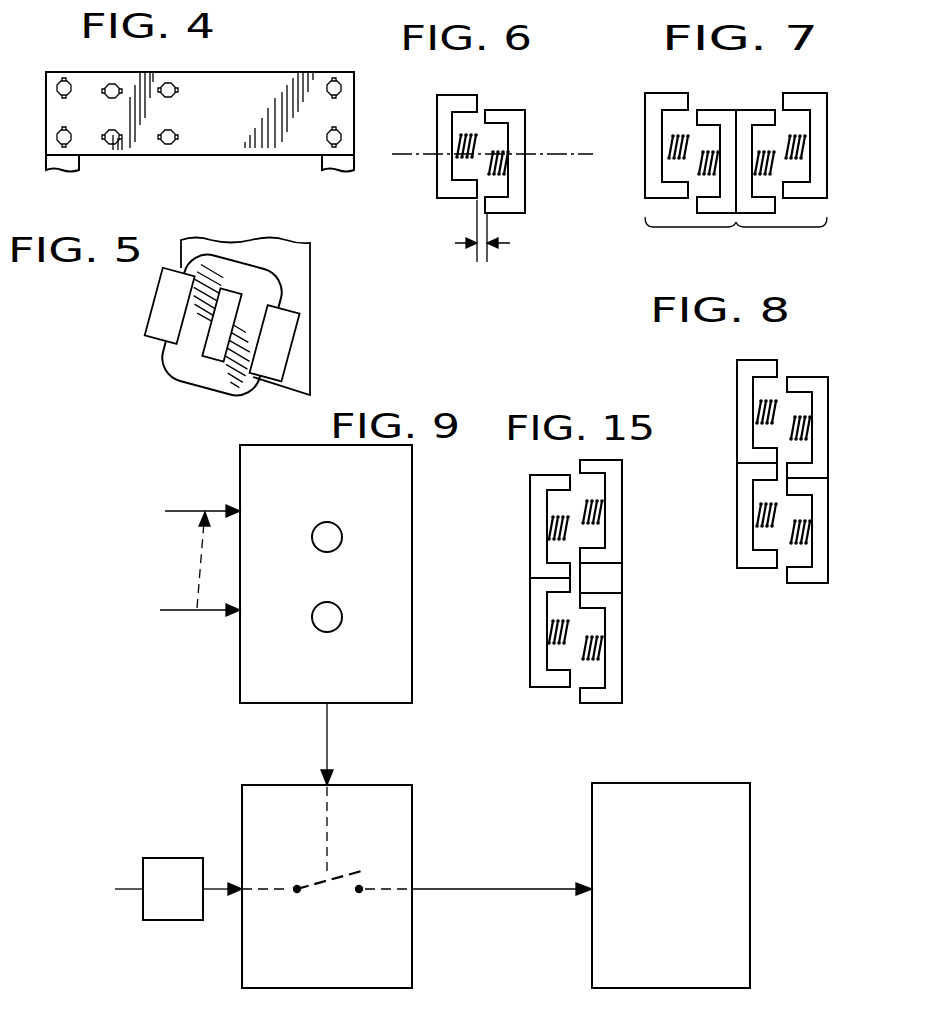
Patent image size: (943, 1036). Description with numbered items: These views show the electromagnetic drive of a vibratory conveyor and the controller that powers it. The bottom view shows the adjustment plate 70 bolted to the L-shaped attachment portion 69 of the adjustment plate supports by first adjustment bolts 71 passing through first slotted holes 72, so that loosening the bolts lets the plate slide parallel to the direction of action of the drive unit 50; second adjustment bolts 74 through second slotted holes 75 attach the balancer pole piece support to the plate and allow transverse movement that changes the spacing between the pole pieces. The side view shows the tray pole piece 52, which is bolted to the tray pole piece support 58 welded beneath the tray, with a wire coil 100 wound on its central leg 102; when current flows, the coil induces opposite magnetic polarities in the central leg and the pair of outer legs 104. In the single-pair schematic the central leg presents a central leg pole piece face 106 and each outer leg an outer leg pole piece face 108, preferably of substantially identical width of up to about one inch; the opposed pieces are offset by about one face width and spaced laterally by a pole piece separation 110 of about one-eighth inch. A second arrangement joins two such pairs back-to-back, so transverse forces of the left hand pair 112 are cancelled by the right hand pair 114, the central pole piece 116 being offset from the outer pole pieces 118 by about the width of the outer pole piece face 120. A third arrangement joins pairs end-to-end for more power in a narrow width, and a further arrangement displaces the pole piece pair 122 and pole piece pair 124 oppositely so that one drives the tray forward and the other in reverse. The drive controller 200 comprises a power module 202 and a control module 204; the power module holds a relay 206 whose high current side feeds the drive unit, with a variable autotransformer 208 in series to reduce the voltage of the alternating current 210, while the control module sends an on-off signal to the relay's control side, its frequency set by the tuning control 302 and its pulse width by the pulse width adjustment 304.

In FIG. 9, the drive unit 50 is at (676, 989).
In FIG. 5, the tray pole piece 52 is at (282, 308).
In FIG. 5, the tray pole piece support 58 is at (310, 262).
In FIG. 4, the attachment portion 69 is at (48, 168).
In FIG. 4, the adjustment plate 70 is at (221, 155).
In FIG. 4, the first adjustment bolts 71 is at (61, 80).
In FIG. 4, the first slotted holes 72 is at (64, 95).
In FIG. 4, the second adjustment bolts 74 is at (168, 146).
In FIG. 4, the second slotted holes 75 is at (174, 137).
In FIG. 5, the wire coil 100 is at (198, 393).
In FIG. 6, the wire coil 100 is at (497, 172).
In FIG. 5, the central leg 102 is at (205, 358).
In FIG. 6, the central leg 102 is at (496, 148).
In FIG. 5, the outer legs 104 is at (148, 340).
In FIG. 6, the outer legs 104 is at (458, 95).
In FIG. 6, the central leg pole piece face 106 is at (465, 164).
In FIG. 6, the outer leg pole piece face 108 is at (480, 106).
In FIG. 6, the pole piece separation 110 is at (492, 250).
In FIG. 7, the left hand pair 112 is at (690, 238).
In FIG. 7, the right hand pair 114 is at (781, 238).
In FIG. 7, the central pole piece 116 is at (720, 110).
In FIG. 7, the outer pole pieces 118 is at (646, 108).
In FIG. 7, the outer pole piece face 120 is at (678, 152).
In FIG. 15, the pole piece pair 122 is at (530, 535).
In FIG. 15, the pole piece pair 124 is at (530, 638).
In FIG. 9, the drive controller 200 is at (380, 734).
In FIG. 9, the power module 202 is at (412, 956).
In FIG. 9, the control module 204 is at (412, 672).
In FIG. 9, the relay 206 is at (354, 868).
In FIG. 9, the variable autotransformer 208 is at (167, 920).
In FIG. 9, the alternating current 210 is at (128, 894).
In FIG. 9, the tuning control 302 is at (341, 530).
In FIG. 9, the pulse width adjustment 304 is at (372, 620).